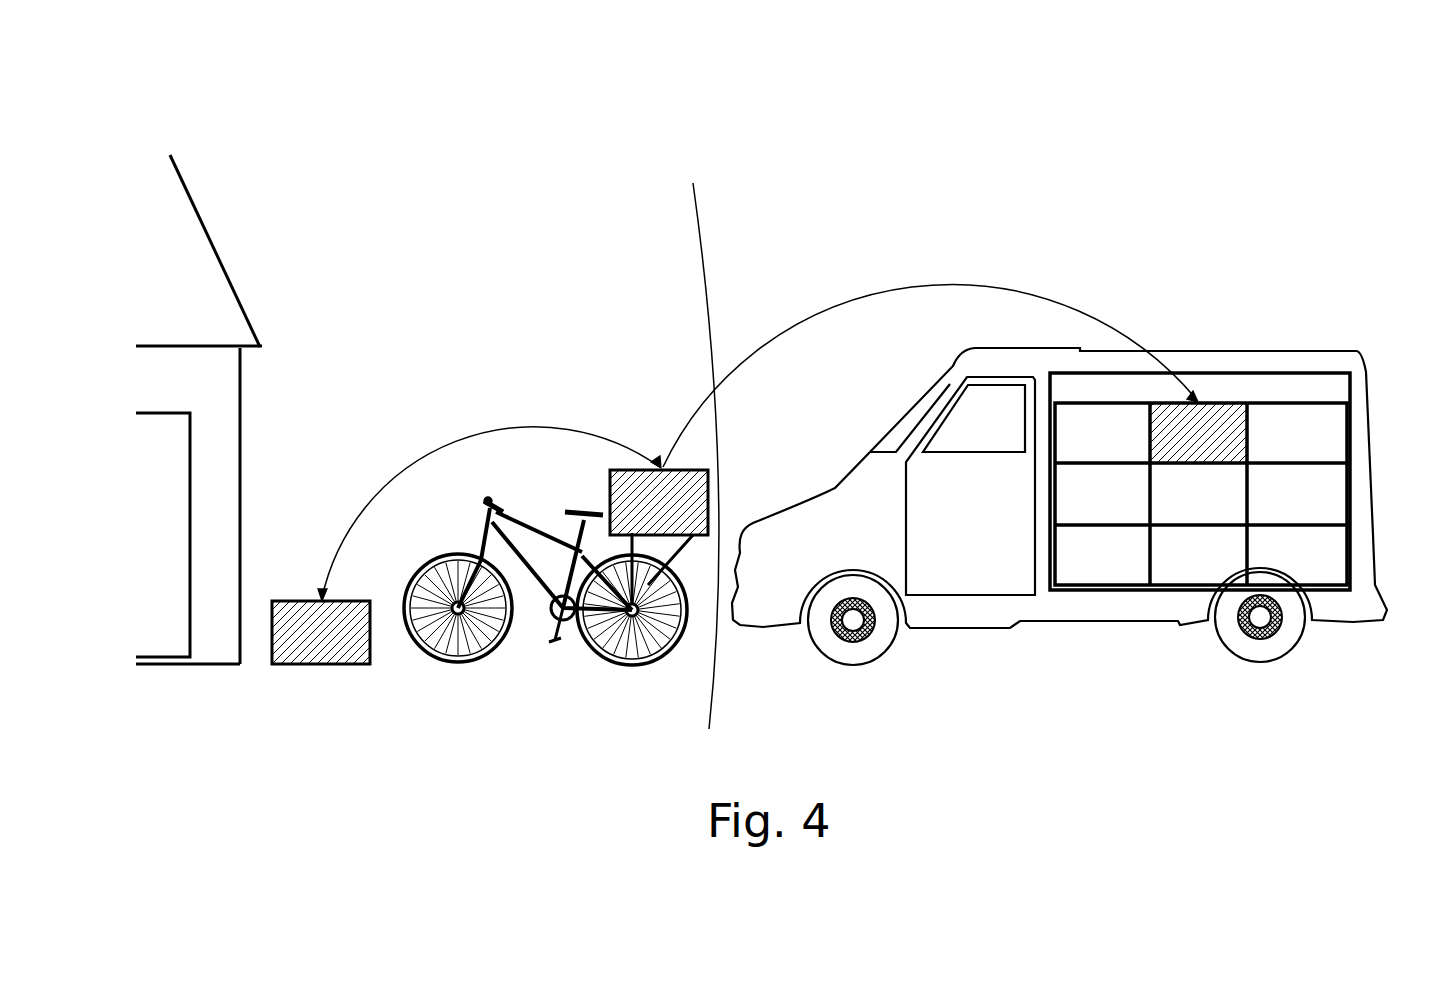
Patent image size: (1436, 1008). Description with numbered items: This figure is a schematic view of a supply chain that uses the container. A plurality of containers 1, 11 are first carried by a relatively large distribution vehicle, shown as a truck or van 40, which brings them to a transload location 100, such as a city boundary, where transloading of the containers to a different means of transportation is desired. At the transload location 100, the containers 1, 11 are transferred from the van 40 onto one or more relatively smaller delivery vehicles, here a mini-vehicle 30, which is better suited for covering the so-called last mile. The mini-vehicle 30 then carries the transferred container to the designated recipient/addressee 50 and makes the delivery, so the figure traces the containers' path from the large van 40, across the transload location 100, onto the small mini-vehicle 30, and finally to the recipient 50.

The container 1 is at (1243, 478).
The container 11 is at (1313, 509).
The mini-vehicle 30 is at (487, 430).
The truck or van 40 is at (1049, 463).
The recipient/addressee 50 is at (190, 160).
The transload location 100 is at (693, 185).